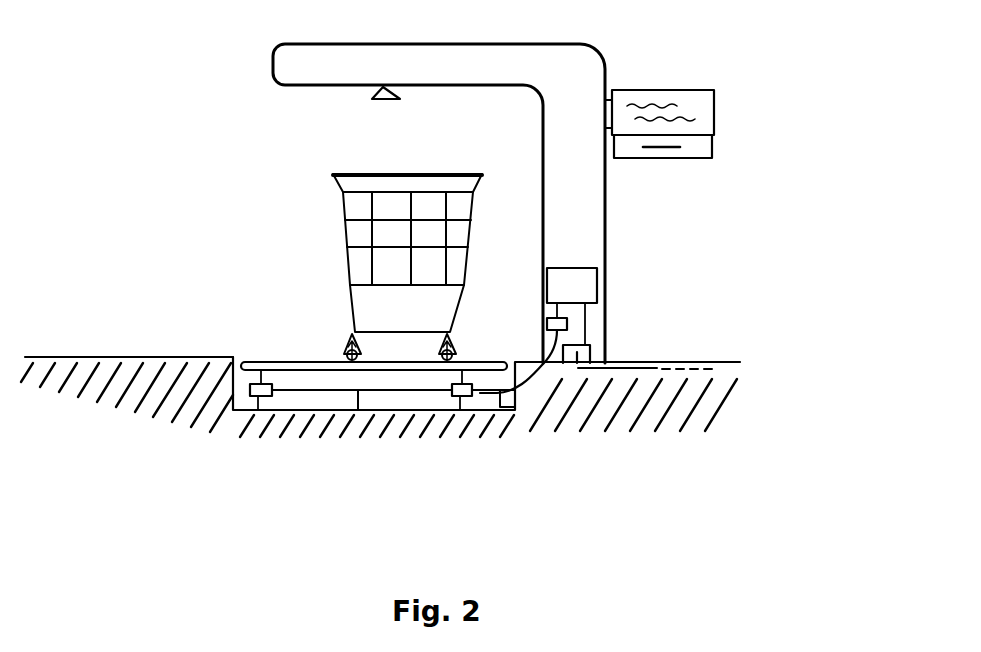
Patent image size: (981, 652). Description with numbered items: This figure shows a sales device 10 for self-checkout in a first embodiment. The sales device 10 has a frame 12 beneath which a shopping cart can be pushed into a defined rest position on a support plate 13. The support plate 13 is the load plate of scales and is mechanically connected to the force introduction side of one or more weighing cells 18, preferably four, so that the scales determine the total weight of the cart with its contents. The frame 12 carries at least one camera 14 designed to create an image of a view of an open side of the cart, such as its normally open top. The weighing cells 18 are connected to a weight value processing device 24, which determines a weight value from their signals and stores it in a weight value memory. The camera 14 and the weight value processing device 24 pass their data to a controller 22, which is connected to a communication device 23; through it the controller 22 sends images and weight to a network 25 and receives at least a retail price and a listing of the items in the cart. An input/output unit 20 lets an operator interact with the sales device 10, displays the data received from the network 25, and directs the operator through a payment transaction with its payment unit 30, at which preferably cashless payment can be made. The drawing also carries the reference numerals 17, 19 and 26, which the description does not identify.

The sales device 10 is at (124, 90).
The frame 12 is at (465, 44).
The support plate 13 is at (272, 356).
The camera 14 is at (405, 100).
The waste container 17 is at (343, 210).
The weighing cell 18 is at (250, 400).
The direction arrow / movement 19 is at (300, 400).
The input/output unit 20 is at (714, 90).
The controller 22 is at (597, 284).
The communication device 23 is at (593, 350).
The weight value processing device 24 is at (543, 322).
The network 25 is at (655, 363).
The base frame 26 is at (358, 393).
The payment unit 30 is at (683, 148).